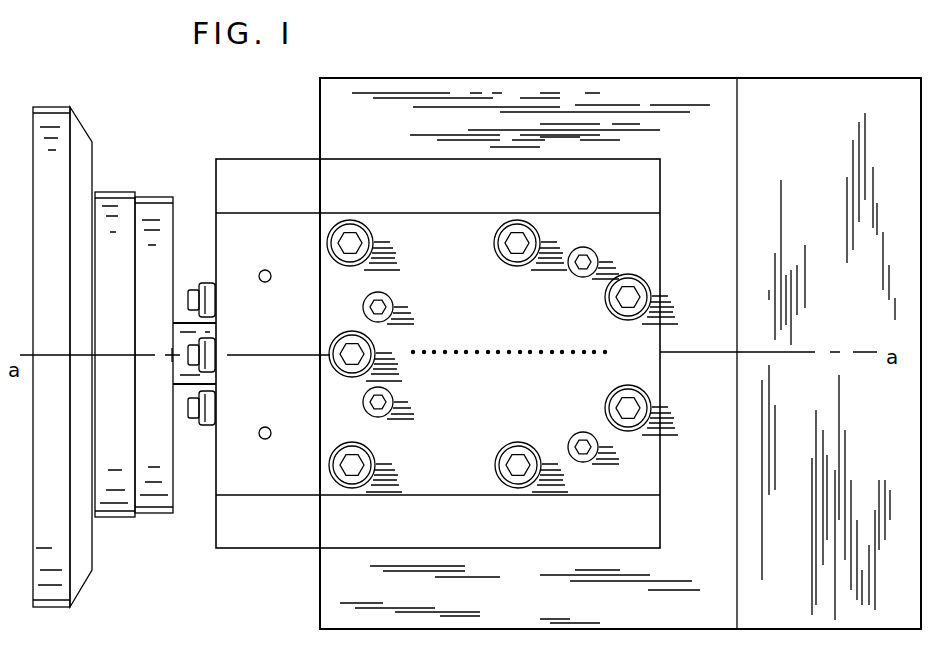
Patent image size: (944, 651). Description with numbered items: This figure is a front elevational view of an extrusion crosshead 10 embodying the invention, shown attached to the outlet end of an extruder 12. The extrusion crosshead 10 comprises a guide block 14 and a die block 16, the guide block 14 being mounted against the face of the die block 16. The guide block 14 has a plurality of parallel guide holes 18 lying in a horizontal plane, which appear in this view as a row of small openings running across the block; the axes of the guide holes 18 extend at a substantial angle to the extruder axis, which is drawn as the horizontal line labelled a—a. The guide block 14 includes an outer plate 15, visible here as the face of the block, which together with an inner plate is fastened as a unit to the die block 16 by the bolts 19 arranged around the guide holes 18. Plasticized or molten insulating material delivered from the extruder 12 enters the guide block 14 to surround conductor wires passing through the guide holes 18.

The extrusion crosshead 10 is at (237, 579).
The extruder 12 is at (56, 128).
The guide block 14 is at (672, 488).
The outer plate 15 is at (633, 451).
The die block 16 is at (263, 178).
The guide holes 18 is at (453, 356).
The bolts 19 is at (505, 238).